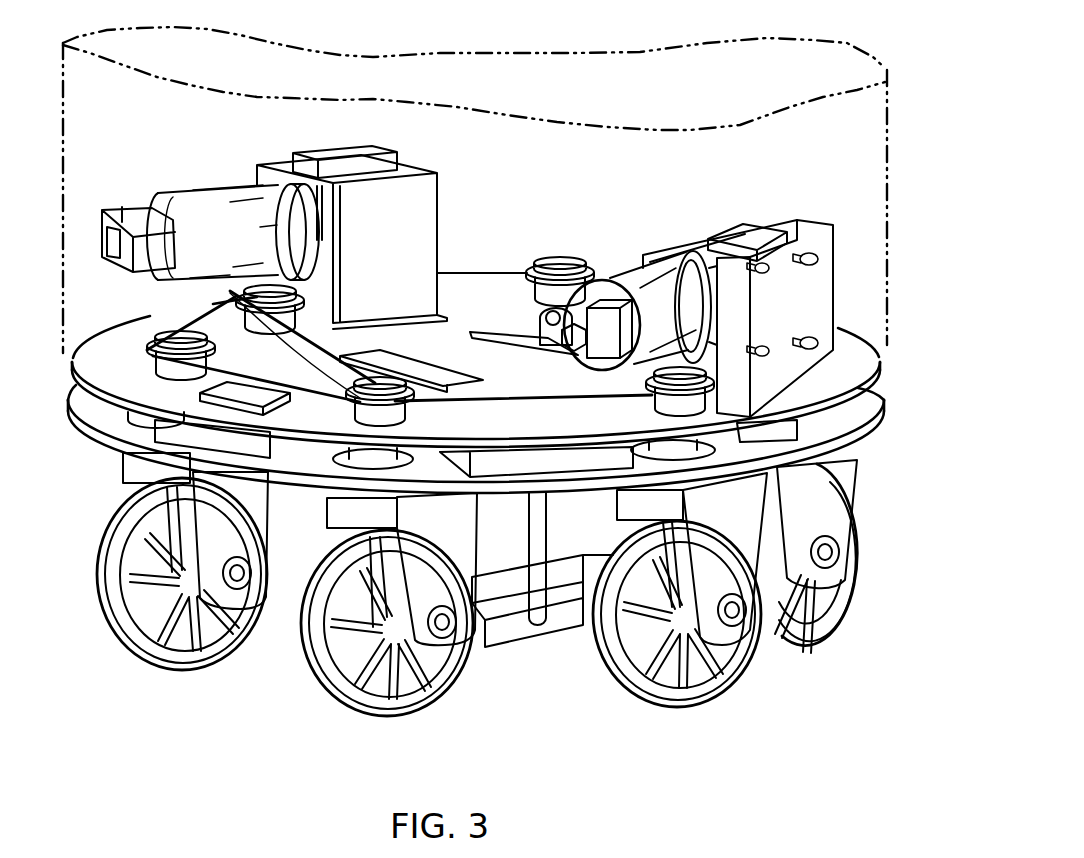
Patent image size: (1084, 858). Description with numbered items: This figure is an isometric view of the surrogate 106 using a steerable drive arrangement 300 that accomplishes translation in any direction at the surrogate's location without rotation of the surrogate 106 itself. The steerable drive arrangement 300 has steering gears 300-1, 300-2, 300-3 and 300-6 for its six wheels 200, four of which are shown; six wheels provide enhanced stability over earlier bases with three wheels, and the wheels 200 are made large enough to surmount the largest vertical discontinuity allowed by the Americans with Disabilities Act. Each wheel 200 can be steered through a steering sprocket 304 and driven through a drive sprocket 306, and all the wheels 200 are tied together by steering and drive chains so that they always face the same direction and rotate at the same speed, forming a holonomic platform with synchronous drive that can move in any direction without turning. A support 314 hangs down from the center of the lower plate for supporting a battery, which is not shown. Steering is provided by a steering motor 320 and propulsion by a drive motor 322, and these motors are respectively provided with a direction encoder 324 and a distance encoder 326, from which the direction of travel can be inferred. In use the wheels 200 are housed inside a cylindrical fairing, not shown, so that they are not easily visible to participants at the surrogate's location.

The surrogate 106 is at (906, 110).
The wheel 200 is at (207, 657).
The steerable drive arrangement 300 is at (878, 466).
The steering gear 300-1 is at (467, 532).
The steering gear 300-2 is at (756, 516).
The steering gear 300-3 is at (853, 484).
The steering gear 300-6 is at (263, 514).
The steering sprocket 304 is at (227, 290).
The drive sprocket 306 is at (383, 380).
The support 314 is at (550, 622).
The steering motor 320 is at (258, 248).
The drive motor 322 is at (681, 309).
The direction encoder 324 is at (100, 215).
The distance encoder 326 is at (588, 318).